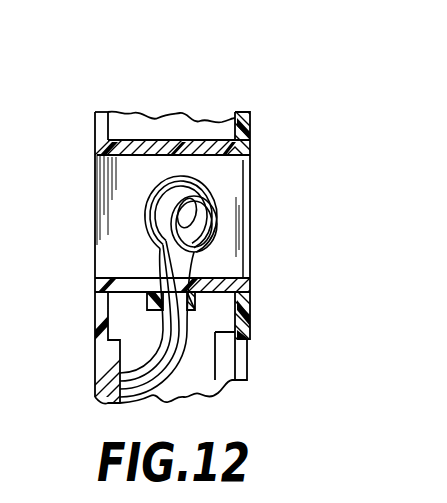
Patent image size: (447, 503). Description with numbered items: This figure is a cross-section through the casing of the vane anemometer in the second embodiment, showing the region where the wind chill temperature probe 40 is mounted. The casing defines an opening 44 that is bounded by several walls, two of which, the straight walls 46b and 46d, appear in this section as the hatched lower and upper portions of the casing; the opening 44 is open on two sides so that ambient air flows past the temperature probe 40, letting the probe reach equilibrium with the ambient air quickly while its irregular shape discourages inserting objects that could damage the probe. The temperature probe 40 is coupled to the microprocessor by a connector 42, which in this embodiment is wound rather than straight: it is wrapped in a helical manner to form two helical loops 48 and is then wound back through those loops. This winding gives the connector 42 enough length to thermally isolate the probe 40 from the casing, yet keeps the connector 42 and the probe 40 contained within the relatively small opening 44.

The temperature probe 40 is at (190, 214).
The connector 42 is at (150, 217).
The opening 44 is at (232, 218).
The wall 46b is at (236, 272).
The wall 46d is at (212, 150).
The helical loops 48 is at (143, 202).